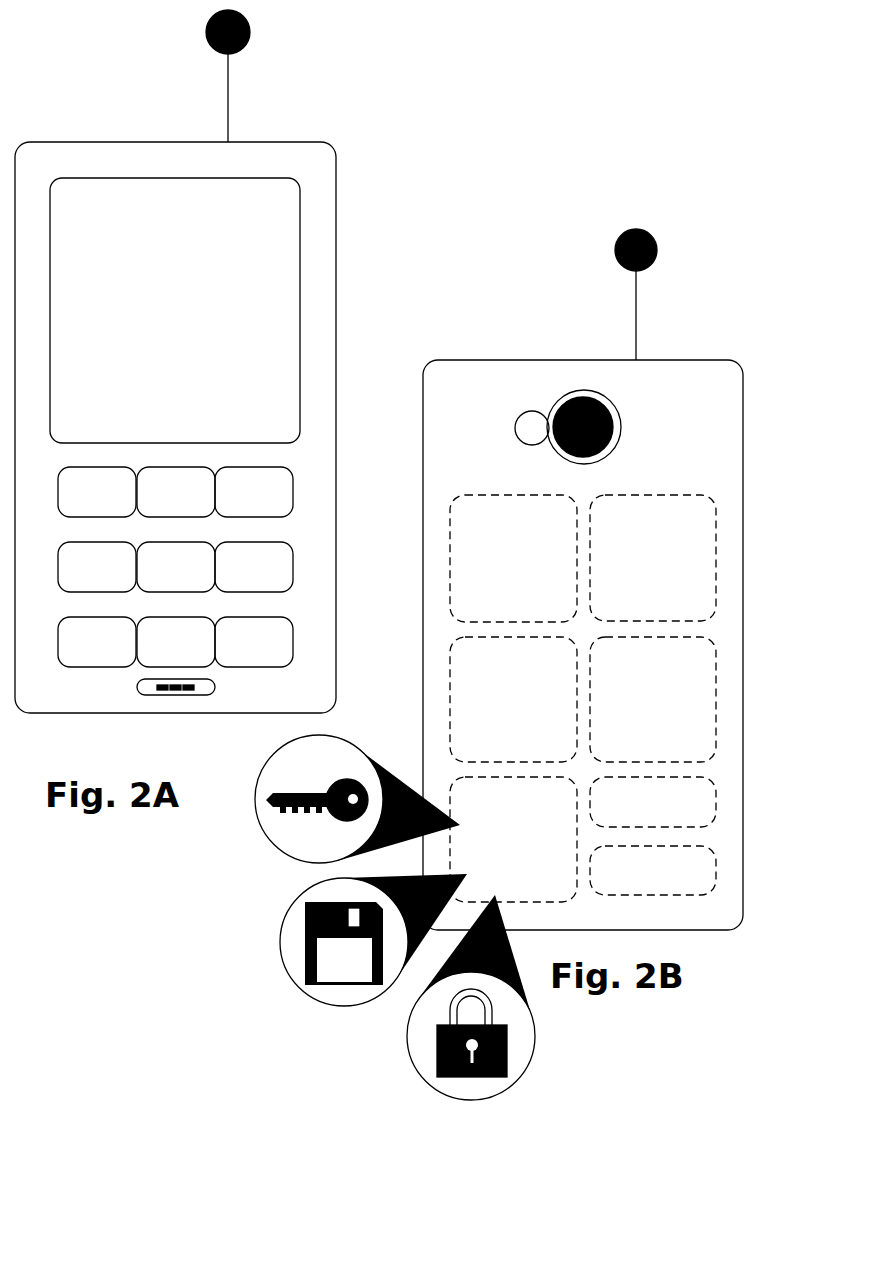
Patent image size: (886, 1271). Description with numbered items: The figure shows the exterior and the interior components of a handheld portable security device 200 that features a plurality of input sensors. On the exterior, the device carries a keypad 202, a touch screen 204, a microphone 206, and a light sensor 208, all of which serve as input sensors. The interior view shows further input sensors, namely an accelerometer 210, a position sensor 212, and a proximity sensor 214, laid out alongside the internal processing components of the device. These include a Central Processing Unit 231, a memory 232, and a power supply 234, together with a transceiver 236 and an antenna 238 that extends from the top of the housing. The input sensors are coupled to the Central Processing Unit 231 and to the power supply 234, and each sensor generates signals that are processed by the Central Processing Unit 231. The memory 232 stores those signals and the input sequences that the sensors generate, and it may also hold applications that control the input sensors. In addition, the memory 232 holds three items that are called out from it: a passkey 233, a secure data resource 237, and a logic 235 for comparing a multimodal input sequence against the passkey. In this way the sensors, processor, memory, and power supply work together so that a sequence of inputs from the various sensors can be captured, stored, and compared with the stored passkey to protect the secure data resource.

In FIG. 2A, the portable security device 200 is at (175, 142).
In FIG. 2B, the portable security device 200 is at (628, 360).
In FIG. 2A, the keypad 202 is at (250, 467).
In FIG. 2A, the touch screen 204 is at (303, 205).
In FIG. 2A, the microphone 206 is at (175, 697).
In FIG. 2B, the light sensor 208 is at (560, 393).
In FIG. 2B, the accelerometer 210 is at (493, 493).
In FIG. 2B, the position sensor 212 is at (500, 635).
In FIG. 2B, the proximity sensor 214 is at (665, 493).
In FIG. 2B, the Central Processing Unit (CPU) 231 is at (668, 777).
In FIG. 2B, the memory 232 is at (497, 775).
In FIG. 2B, the passkey 233 is at (317, 808).
In FIG. 2B, the power supply 234 is at (668, 635).
In FIG. 2B, the logic 235 is at (305, 940).
In FIG. 2B, the transceiver 236 is at (668, 845).
In FIG. 2B, the secure data resource 237 is at (437, 1040).
In FIG. 2B, the antenna 238 is at (635, 228).